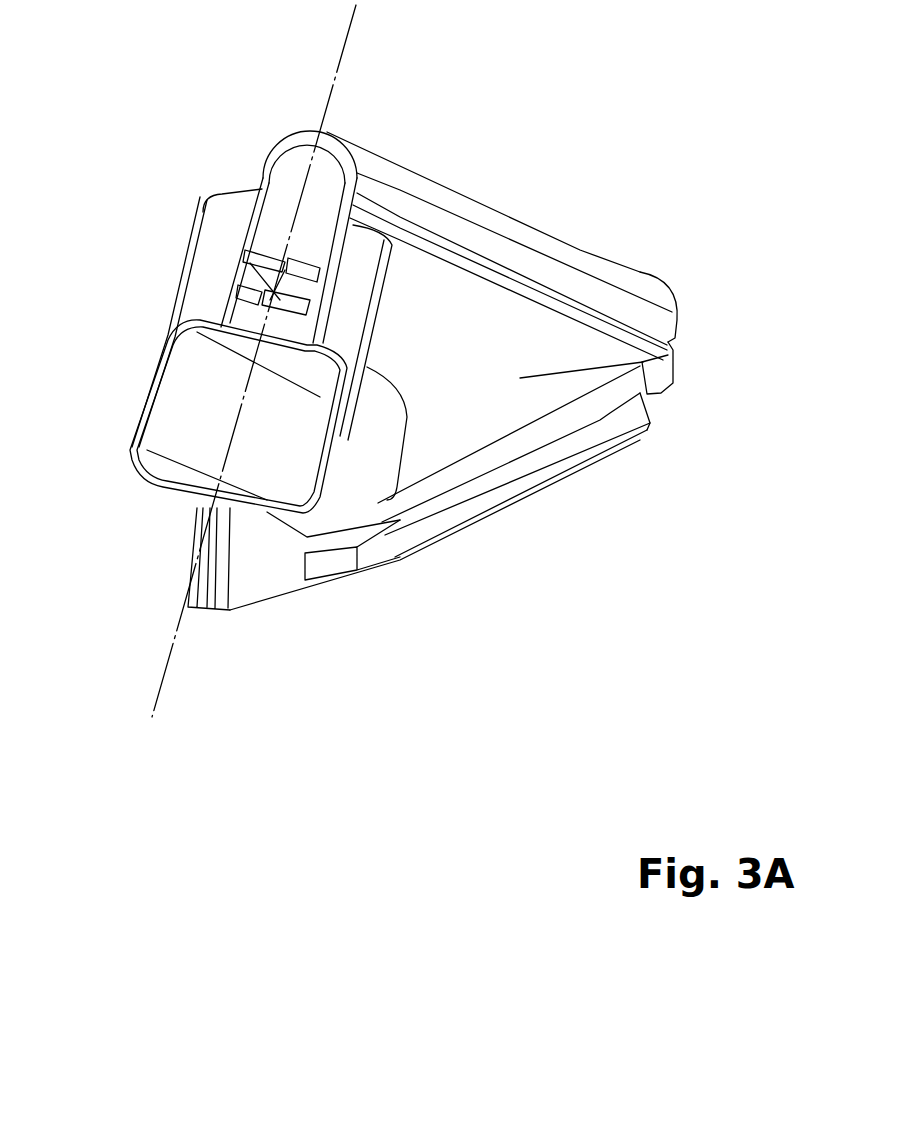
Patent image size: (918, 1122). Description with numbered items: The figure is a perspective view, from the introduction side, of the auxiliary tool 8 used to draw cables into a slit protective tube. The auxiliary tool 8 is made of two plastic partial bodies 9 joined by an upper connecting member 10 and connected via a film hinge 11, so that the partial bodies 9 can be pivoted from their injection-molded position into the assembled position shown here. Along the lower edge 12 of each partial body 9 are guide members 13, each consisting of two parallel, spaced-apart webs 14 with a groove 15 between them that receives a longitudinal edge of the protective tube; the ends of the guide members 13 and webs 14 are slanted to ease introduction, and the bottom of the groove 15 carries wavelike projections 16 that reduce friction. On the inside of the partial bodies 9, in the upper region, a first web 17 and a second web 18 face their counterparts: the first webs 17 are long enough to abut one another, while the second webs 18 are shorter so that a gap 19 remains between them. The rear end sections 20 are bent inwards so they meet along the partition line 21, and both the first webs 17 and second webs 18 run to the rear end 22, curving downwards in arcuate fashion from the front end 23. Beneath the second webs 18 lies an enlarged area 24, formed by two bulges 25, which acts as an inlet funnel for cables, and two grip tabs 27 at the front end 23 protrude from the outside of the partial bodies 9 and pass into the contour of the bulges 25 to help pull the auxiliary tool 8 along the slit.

The auxiliary tool 8 is at (537, 203).
The partial body 9 is at (320, 397).
The upper connecting member 10 is at (403, 173).
The film hinge 11 is at (262, 182).
The lower edge 12 is at (267, 583).
The guide member 13 is at (447, 550).
The web 14 is at (497, 530).
The groove 15 is at (572, 448).
The projection 16 is at (617, 413).
The first web 17 is at (300, 262).
The second web 18 is at (250, 283).
The gap 19 is at (257, 287).
The rear end section 20 is at (190, 545).
The partition line 21 is at (170, 660).
The rear end 22 is at (673, 378).
The front end 23 is at (290, 127).
The enlarged area 24 is at (190, 435).
The bulge 25 is at (147, 385).
The grip tab 27 is at (192, 277).